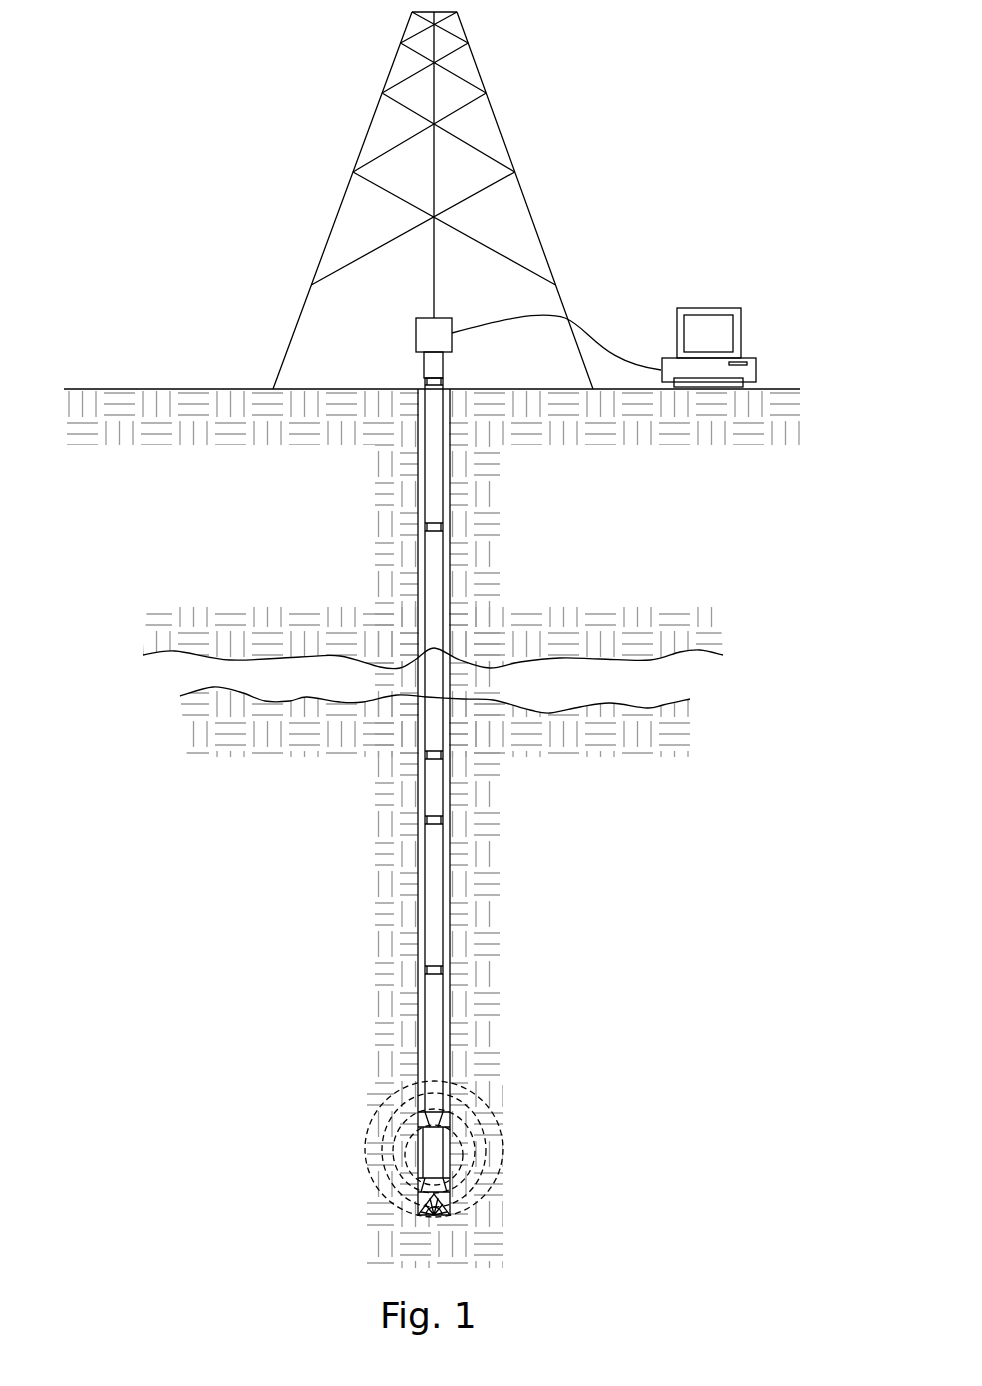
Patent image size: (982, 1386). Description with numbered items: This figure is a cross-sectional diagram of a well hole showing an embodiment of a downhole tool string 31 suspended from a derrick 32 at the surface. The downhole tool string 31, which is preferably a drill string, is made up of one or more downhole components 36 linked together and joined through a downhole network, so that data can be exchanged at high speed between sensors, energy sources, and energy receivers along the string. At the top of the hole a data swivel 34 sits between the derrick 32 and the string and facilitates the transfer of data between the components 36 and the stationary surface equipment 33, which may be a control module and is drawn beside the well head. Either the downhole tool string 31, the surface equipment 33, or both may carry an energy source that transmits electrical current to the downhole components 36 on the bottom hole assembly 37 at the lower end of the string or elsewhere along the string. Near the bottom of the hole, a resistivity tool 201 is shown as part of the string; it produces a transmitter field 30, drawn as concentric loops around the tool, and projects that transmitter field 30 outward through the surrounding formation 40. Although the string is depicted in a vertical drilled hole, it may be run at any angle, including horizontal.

The transmitter field 30 is at (506, 1180).
The downhole tool string 31 is at (457, 378).
The derrick 32 is at (527, 200).
The surface equipment 33 is at (712, 330).
The data swivel 34 is at (434, 333).
The downhole components 36 is at (436, 788).
The bottom hole assembly 37 is at (417, 1215).
The formation 40 is at (355, 1047).
The resistivity tool 201 is at (428, 1110).